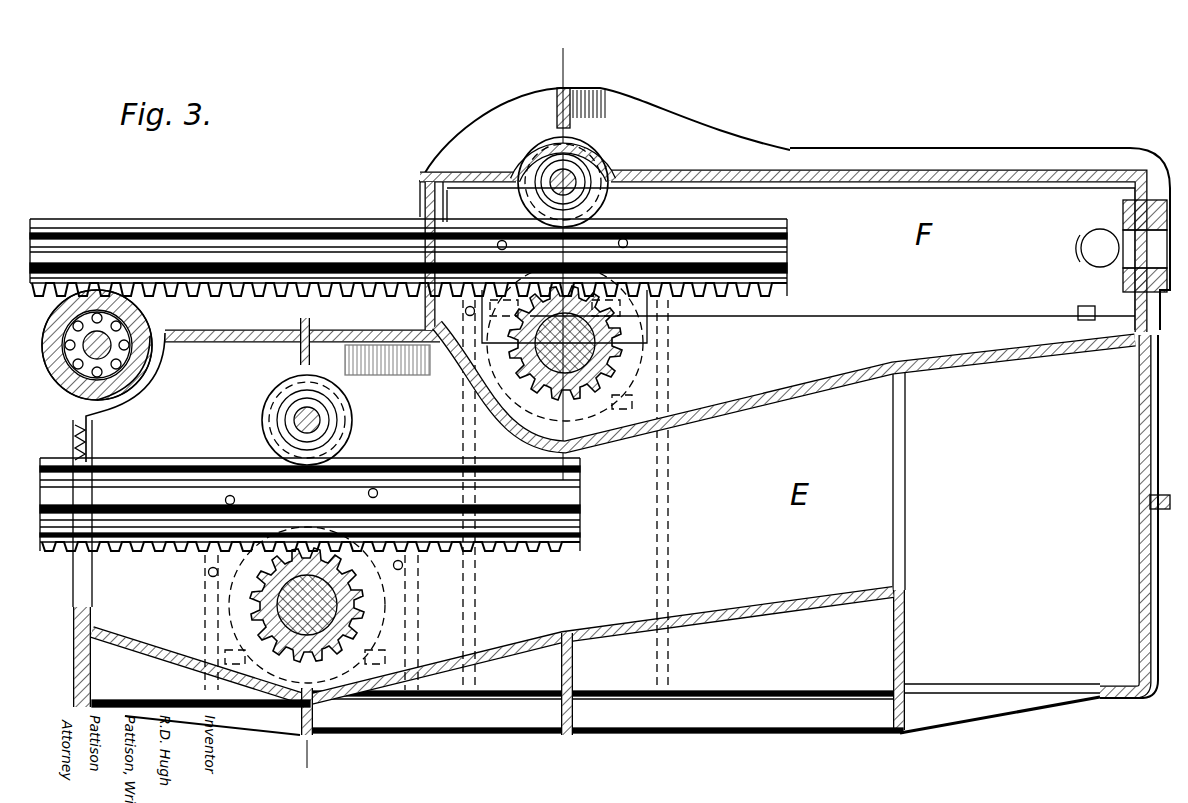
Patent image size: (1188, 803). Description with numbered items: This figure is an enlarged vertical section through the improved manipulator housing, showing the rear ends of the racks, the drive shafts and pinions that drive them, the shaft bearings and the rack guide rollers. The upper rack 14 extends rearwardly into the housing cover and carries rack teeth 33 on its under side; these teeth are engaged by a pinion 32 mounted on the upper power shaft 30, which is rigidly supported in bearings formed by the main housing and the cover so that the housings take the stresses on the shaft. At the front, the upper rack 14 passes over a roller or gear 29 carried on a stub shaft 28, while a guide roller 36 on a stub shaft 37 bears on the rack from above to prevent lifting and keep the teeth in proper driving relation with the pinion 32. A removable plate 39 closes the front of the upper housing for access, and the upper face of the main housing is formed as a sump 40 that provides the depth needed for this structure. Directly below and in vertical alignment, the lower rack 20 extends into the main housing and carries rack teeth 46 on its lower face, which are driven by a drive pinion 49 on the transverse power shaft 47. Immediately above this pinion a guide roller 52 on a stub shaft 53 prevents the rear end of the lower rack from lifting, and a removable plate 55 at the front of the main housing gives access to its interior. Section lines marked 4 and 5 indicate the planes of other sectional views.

The section line 4- 4 is at (304, 545).
The section line 5- 5 is at (564, 262).
The upper rack 14 is at (77, 253).
The lower rack 20 is at (120, 500).
The stub shaft 28 is at (157, 390).
The roller or gear 29 is at (142, 332).
The upper power shaft 30 is at (590, 362).
The pinion 32 is at (600, 329).
The rack teeth 33 is at (762, 290).
The guide roller 36 is at (585, 160).
The stub shaft 37 is at (575, 185).
The removable plate 39 is at (424, 207).
The sump 40 is at (597, 425).
The rack teeth 46 is at (505, 548).
The transverse power shaft 47 is at (355, 607).
The drive pinion 49 is at (257, 607).
The guide roller 52 is at (340, 407).
The stub shaft 53 is at (330, 424).
The removable plate 55 is at (82, 575).